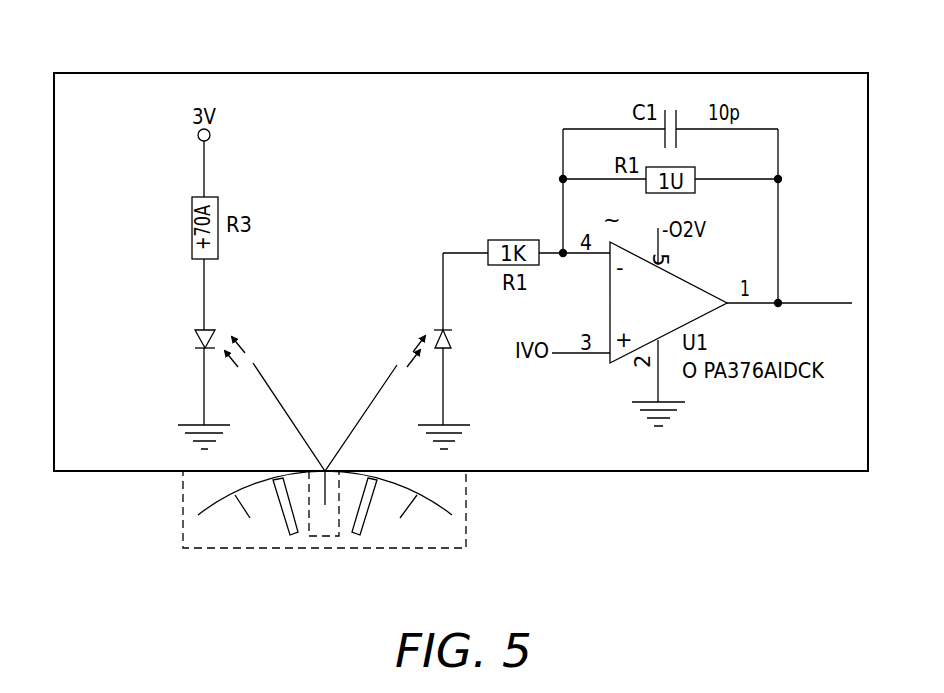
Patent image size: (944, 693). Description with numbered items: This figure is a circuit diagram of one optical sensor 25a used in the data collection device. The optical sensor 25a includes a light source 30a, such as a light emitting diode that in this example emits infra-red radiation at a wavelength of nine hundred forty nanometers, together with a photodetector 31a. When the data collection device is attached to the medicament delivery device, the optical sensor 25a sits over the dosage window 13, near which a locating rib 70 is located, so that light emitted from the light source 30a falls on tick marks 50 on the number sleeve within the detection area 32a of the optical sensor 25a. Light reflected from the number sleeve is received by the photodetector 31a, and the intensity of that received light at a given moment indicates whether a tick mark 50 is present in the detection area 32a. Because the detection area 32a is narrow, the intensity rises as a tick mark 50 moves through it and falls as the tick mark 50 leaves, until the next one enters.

The optical sensor 25a is at (459, 73).
The light source 30a is at (210, 328).
The photodetector 31a is at (448, 348).
The dosage window 13 is at (183, 530).
The locating rib 70 is at (447, 508).
The detection area 32a is at (322, 536).
The tick marks 50 is at (262, 557).